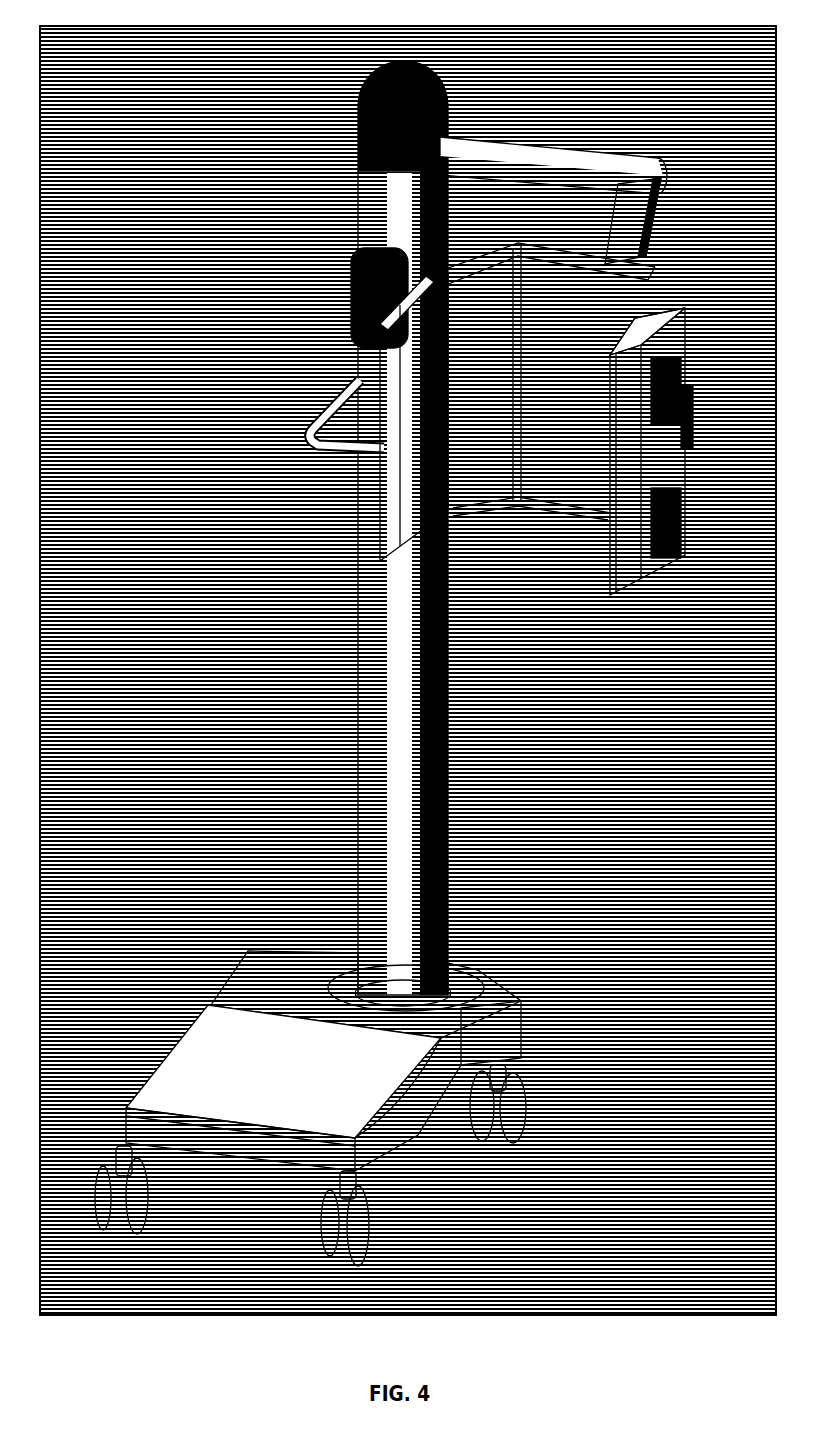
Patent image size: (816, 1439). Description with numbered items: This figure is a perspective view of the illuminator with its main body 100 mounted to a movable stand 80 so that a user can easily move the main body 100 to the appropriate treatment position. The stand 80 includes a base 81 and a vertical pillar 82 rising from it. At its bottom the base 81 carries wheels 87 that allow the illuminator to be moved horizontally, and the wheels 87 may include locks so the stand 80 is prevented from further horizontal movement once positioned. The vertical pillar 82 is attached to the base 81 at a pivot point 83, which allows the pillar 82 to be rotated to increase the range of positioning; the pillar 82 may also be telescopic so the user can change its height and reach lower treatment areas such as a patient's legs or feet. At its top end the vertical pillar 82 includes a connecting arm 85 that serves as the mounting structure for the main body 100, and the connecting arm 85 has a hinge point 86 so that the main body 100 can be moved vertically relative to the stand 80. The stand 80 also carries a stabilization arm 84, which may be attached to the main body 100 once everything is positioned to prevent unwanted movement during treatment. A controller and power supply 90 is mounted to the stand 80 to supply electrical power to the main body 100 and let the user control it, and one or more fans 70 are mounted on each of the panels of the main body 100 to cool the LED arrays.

The movable stand 80 is at (152, 348).
The base 81 is at (197, 1027).
The vertical pillar 82 is at (372, 722).
The pivot point 83 is at (440, 960).
The stabilization arm 84 is at (342, 433).
The connecting arm 85 is at (563, 150).
The hinge point 86 is at (645, 177).
The wheels 87 is at (517, 1092).
The controller and power supply 90 is at (343, 313).
The fans 70 is at (677, 367).
The main body 100 is at (557, 555).